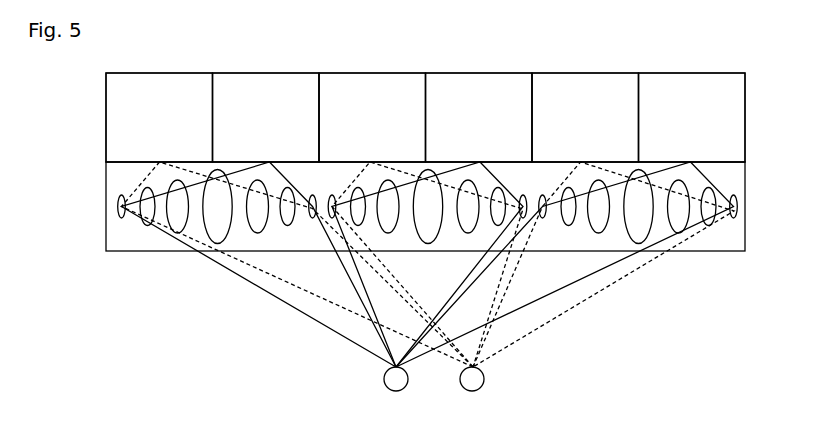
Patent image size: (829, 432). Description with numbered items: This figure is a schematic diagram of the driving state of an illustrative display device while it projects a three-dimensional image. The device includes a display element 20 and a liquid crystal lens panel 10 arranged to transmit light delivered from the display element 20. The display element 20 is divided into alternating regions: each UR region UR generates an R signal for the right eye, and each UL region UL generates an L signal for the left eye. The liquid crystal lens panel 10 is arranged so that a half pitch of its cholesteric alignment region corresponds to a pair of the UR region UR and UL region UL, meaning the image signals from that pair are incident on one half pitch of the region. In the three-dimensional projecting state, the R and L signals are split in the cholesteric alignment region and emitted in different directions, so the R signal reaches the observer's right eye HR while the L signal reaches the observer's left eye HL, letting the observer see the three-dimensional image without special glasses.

The display element 20 is at (453, 117).
The liquid crystal lens panel 10 is at (728, 235).
The UR region UR is at (372, 117).
The UL region UL is at (479, 117).
The left eye HL is at (396, 391).
The right eye HR is at (472, 391).